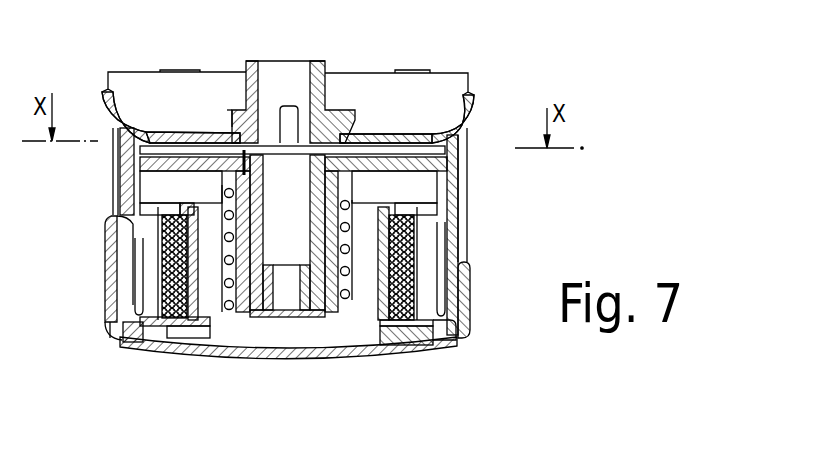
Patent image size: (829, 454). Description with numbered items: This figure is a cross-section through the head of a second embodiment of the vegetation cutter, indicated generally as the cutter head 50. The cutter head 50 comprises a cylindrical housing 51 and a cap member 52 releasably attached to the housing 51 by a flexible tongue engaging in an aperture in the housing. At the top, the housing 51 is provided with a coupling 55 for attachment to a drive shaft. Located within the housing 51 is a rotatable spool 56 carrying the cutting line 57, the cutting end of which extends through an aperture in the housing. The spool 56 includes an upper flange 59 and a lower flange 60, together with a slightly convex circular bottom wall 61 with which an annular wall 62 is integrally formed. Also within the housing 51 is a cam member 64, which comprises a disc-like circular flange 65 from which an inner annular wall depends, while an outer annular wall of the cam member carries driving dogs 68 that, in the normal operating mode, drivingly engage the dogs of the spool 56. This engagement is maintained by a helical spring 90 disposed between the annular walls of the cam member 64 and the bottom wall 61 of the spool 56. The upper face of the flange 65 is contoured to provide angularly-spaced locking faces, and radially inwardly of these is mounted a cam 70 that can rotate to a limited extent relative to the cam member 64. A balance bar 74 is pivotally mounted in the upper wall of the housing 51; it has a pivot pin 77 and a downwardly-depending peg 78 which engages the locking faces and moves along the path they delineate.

The cutter head 50 is at (480, 340).
The cylindrical housing 51 is at (450, 183).
The cap member 52 is at (127, 338).
The coupling 55 is at (313, 78).
The rotatable spool 56 is at (440, 286).
The cutting line 57 is at (160, 268).
The upper flange 59 is at (442, 198).
The lower flange 60 is at (427, 327).
The bottom wall 61 is at (313, 357).
The annular wall 62 is at (228, 254).
The cam member 64 is at (207, 178).
The circular flange 65 is at (440, 166).
The driving dogs 68 is at (414, 257).
The cam 70 is at (213, 157).
The balance bar 74 is at (360, 150).
The pivot pin 77 is at (284, 108).
The peg 78 is at (260, 163).
The helical spring 90 is at (229, 283).